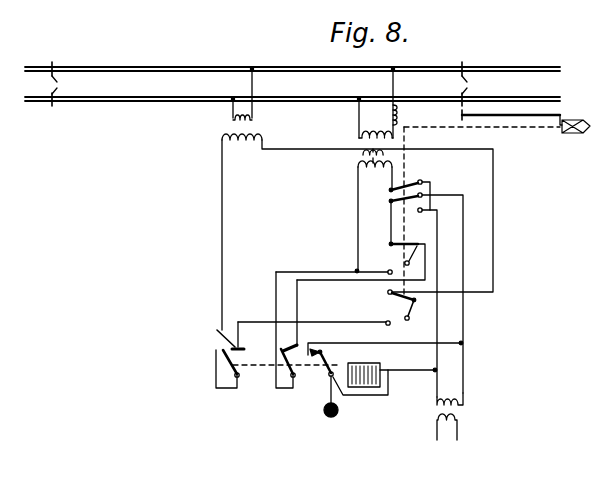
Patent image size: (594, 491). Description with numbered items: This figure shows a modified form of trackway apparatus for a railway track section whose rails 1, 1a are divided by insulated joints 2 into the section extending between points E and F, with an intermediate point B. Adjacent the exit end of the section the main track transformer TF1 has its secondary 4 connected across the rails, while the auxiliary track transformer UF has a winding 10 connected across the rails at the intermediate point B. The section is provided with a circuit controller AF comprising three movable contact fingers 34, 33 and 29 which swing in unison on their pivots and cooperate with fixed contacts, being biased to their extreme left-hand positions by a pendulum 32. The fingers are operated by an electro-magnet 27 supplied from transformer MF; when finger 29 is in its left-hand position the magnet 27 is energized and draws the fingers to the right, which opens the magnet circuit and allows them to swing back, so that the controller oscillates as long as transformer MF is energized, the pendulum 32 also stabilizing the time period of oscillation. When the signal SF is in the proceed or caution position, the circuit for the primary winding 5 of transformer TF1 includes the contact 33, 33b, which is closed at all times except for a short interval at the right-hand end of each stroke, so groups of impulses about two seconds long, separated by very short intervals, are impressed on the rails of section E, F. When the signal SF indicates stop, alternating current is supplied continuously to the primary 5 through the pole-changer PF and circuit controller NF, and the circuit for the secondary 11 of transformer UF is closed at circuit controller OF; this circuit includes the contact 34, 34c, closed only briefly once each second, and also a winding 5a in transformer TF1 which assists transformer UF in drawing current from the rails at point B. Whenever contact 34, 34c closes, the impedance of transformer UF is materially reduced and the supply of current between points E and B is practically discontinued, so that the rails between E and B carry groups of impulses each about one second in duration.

The track rail 1 is at (177, 68).
The track rail 1a is at (138, 101).
The insulated joint 2 is at (266, 86).
The secondary 4 is at (381, 102).
The primary winding 5 is at (373, 217).
The winding 5a is at (362, 156).
The winding 10 is at (233, 118).
The secondary 11 is at (242, 148).
The electro-magnet 27 is at (372, 363).
The contact finger 29 is at (385, 358).
The pendulum 32 is at (338, 418).
The contact finger 33 is at (283, 362).
The fixed contact 33b is at (296, 346).
The contact finger 34 is at (226, 366).
The fixed contact 34c is at (222, 333).
The point E is at (50, 75).
The intermediate point B is at (249, 81).
The point F is at (467, 75).
The auxiliary track transformer UF is at (274, 122).
The main track transformer TF1 is at (360, 143).
The signal SF is at (583, 133).
The pole-changer PF is at (410, 288).
The circuit controller NF is at (391, 254).
The circuit controller OF is at (394, 305).
The circuit controller AF is at (286, 400).
The transformer MF is at (460, 410).